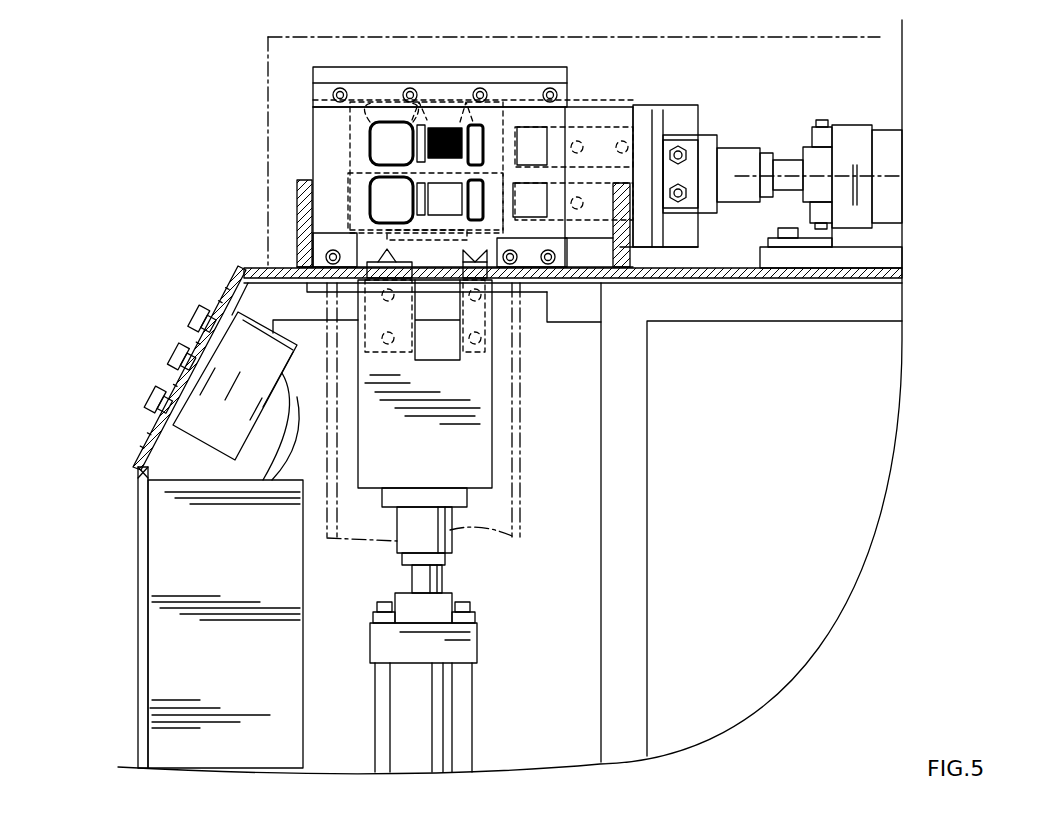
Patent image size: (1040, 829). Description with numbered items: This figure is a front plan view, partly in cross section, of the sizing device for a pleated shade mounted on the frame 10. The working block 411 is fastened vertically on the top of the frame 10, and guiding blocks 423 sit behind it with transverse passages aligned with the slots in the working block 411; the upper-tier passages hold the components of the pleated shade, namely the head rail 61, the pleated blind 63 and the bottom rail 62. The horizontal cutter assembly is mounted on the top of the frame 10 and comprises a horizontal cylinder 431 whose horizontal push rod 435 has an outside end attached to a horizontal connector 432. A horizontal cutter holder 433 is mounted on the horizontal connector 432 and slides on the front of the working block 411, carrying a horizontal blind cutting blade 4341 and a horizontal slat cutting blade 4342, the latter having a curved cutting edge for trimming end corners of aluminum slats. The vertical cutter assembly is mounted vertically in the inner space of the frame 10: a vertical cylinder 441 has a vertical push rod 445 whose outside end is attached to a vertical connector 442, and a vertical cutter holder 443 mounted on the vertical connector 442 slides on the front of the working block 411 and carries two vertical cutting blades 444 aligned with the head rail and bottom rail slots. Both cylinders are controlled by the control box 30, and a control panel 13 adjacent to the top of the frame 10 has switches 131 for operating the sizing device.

The frame 10 is at (145, 505).
The control panel 13 is at (193, 361).
The switches 131 is at (178, 360).
The control box 30 is at (182, 670).
The working block 411 is at (328, 137).
The guiding blocks 423 is at (362, 152).
The head rail 61 is at (386, 118).
The bottom rail 62 is at (478, 126).
The pleated blind 63 is at (437, 128).
The horizontal blind cutting blade 4341 is at (530, 138).
The horizontal slat cutting blade 4342 is at (530, 203).
The horizontal cylinder 431 is at (887, 155).
The horizontal connector 432 is at (707, 147).
The horizontal cutter holder 433 is at (642, 110).
The horizontal push rod 435 is at (788, 167).
The vertical cylinder 441 is at (437, 710).
The vertical connector 442 is at (435, 518).
The vertical cutter holder 443 is at (480, 428).
The vertical cutting blades 444 is at (378, 258).
The vertical push rod 445 is at (427, 580).